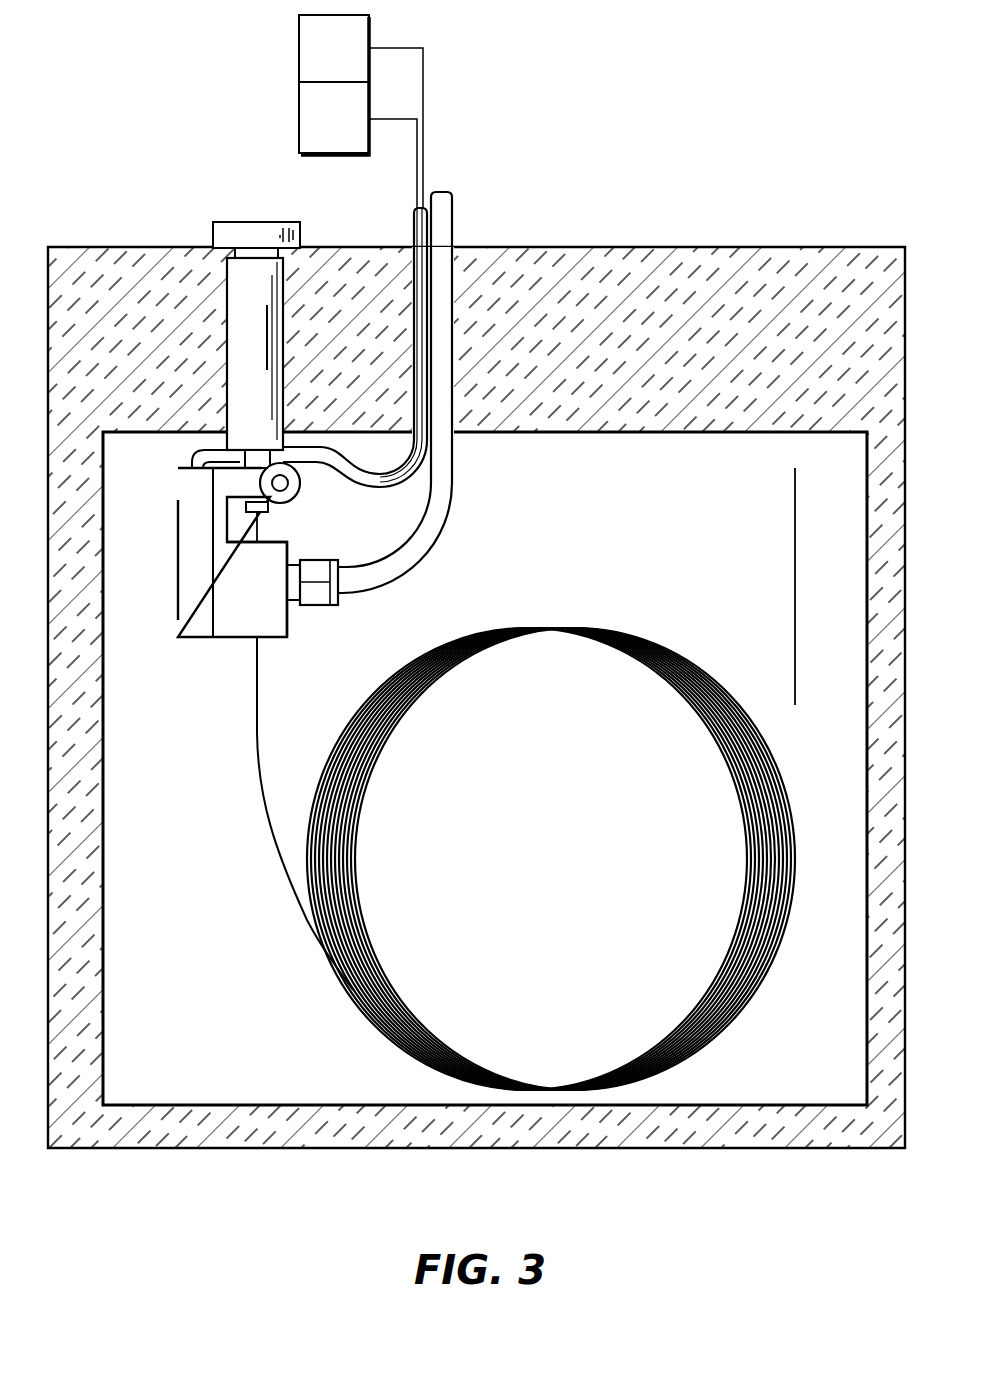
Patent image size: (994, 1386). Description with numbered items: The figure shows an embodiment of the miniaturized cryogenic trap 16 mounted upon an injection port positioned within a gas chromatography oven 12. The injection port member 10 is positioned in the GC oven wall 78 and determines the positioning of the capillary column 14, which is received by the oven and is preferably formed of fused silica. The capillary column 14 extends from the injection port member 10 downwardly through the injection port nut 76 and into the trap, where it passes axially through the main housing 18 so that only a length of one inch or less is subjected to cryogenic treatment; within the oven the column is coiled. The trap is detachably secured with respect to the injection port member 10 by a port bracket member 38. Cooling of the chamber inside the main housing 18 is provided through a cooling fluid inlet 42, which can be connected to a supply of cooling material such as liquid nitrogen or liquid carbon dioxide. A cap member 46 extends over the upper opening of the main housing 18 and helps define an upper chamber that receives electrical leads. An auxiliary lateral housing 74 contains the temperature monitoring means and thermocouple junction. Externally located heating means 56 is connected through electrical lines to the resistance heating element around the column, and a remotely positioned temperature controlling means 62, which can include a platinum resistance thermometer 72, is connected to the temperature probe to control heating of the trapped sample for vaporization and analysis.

The injection port member 10 is at (235, 358).
The gas chromatography oven 12 is at (293, 1148).
The capillary column 14 is at (258, 737).
The miniaturized cryogenic trap 16 is at (178, 575).
The main housing 18 is at (235, 622).
The port bracket member 38 is at (302, 486).
The cooling fluid inlet 42 is at (318, 600).
The cap member 46 is at (277, 549).
The heating means 56 is at (318, 130).
The temperature controlling means 62 is at (318, 63).
The platinum resistance thermometer 72 is at (308, 40).
The auxiliary lateral housing 74 is at (180, 505).
The injection port nut 76 is at (270, 509).
The GC oven wall 78 is at (105, 1052).